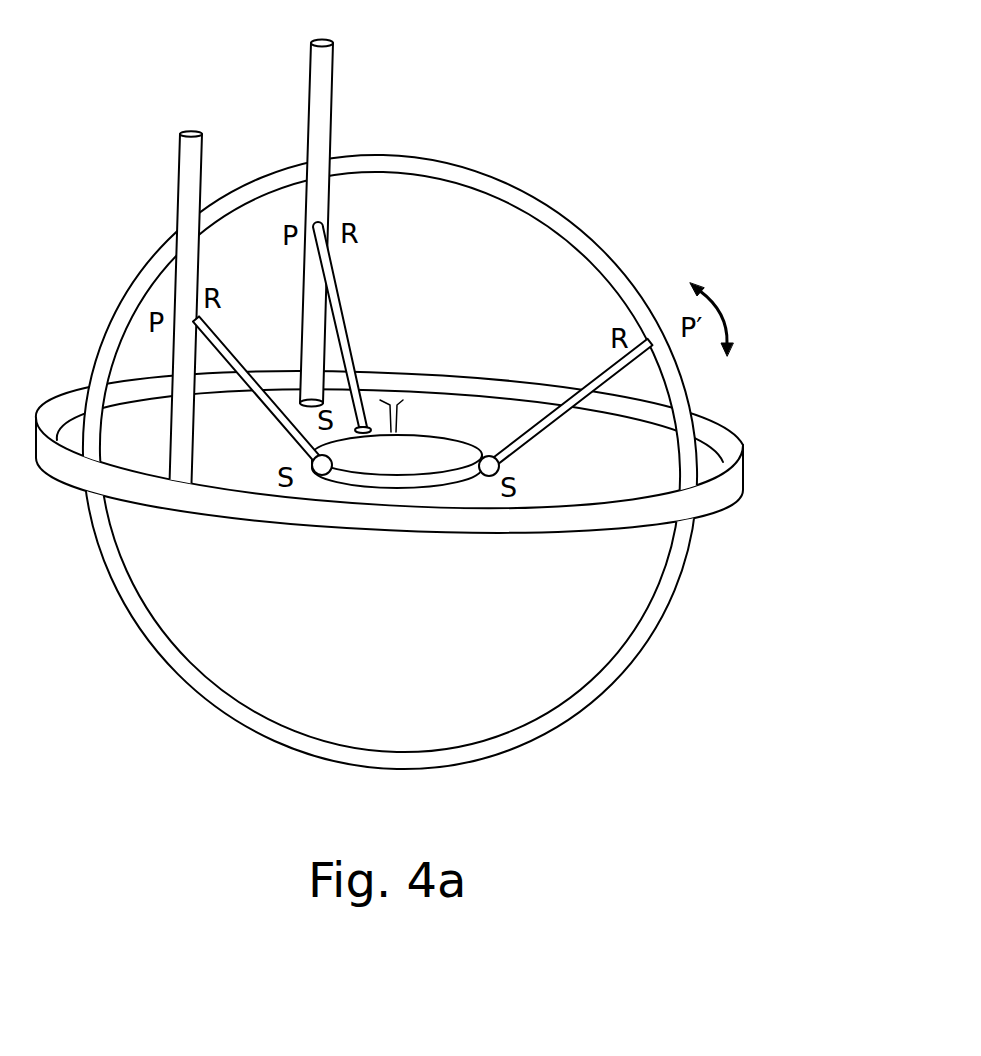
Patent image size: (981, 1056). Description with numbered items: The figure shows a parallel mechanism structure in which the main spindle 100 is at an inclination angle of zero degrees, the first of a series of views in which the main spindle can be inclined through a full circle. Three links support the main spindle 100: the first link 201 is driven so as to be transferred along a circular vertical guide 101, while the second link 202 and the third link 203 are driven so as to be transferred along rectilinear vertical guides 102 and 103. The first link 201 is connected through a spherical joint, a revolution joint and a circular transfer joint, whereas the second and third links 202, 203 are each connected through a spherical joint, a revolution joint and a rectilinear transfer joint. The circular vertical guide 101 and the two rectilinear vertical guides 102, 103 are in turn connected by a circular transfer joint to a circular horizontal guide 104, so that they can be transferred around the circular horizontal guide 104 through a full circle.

The main spindle 100 is at (417, 445).
The circular vertical guide 101 is at (553, 208).
The rectilinear vertical guide 102 is at (333, 70).
The rectilinear vertical guide 103 is at (203, 160).
The circular horizontal guide 104 is at (745, 467).
The first link 201 is at (586, 386).
The second link 202 is at (340, 300).
The third link 203 is at (273, 347).